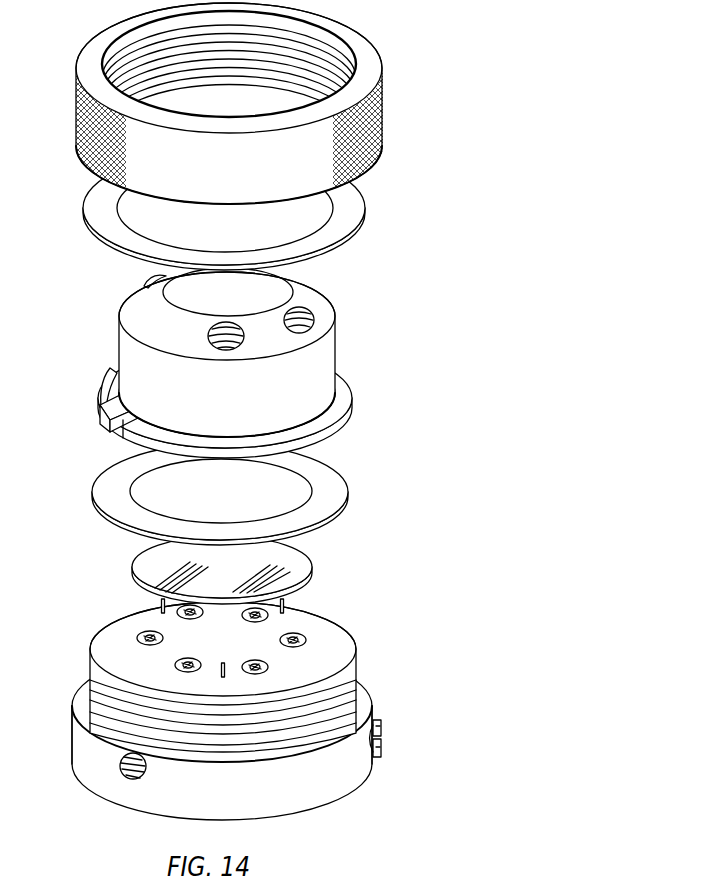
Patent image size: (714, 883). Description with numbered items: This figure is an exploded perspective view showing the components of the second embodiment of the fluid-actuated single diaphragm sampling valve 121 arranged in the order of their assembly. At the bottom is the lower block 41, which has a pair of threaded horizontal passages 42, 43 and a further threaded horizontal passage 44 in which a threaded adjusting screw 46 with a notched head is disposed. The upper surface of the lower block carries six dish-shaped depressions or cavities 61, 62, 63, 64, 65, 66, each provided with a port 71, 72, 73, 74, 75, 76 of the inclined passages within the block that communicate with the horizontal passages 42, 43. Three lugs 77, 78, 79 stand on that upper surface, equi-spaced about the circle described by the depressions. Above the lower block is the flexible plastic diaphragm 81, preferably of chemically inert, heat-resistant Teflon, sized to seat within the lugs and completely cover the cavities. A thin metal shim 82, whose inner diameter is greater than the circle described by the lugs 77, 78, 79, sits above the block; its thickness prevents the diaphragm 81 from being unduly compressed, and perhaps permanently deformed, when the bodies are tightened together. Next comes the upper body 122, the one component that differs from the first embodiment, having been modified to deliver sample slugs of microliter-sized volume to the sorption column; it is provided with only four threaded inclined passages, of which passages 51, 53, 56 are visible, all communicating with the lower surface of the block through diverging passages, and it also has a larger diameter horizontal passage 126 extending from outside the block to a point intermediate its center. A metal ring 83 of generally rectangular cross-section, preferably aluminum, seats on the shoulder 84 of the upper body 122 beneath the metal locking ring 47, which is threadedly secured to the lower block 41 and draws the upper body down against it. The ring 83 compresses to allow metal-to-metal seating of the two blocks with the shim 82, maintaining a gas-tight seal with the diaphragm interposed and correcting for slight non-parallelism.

The locking ring 47 is at (361, 143).
The metal ring 83 is at (330, 238).
The threaded inclined passage 53 is at (160, 281).
The threaded inclined passage 51 is at (232, 322).
The threaded inclined passage 56 is at (292, 306).
The upper body 122 is at (323, 355).
The shoulder 84 is at (108, 382).
The horizontal passage 126 is at (100, 415).
The metal shim 82 is at (341, 498).
The diaphragm 81 is at (313, 546).
The sampling valve 121 is at (92, 611).
The lug 78 is at (160, 602).
The lug 79 is at (284, 605).
The lug 77 is at (221, 672).
The port 74 is at (195, 607).
The port 75 is at (257, 608).
The dish-shaped depression 64 is at (204, 613).
The dish-shaped depression 65 is at (249, 618).
The dish-shaped depression 63 is at (150, 633).
The port 73 is at (145, 641).
The dish-shaped depression 66 is at (298, 637).
The port 76 is at (299, 641).
The dish-shaped depression 62 is at (193, 663).
The port 72 is at (178, 667).
The dish-shaped depression 61 is at (253, 668).
The port 71 is at (266, 667).
The adjusting screw 46 is at (378, 718).
The threaded horizontal passage 42 is at (70, 747).
The threaded horizontal passage 43 is at (120, 767).
The threaded horizontal passage 44 is at (371, 757).
The lower block 41 is at (304, 817).